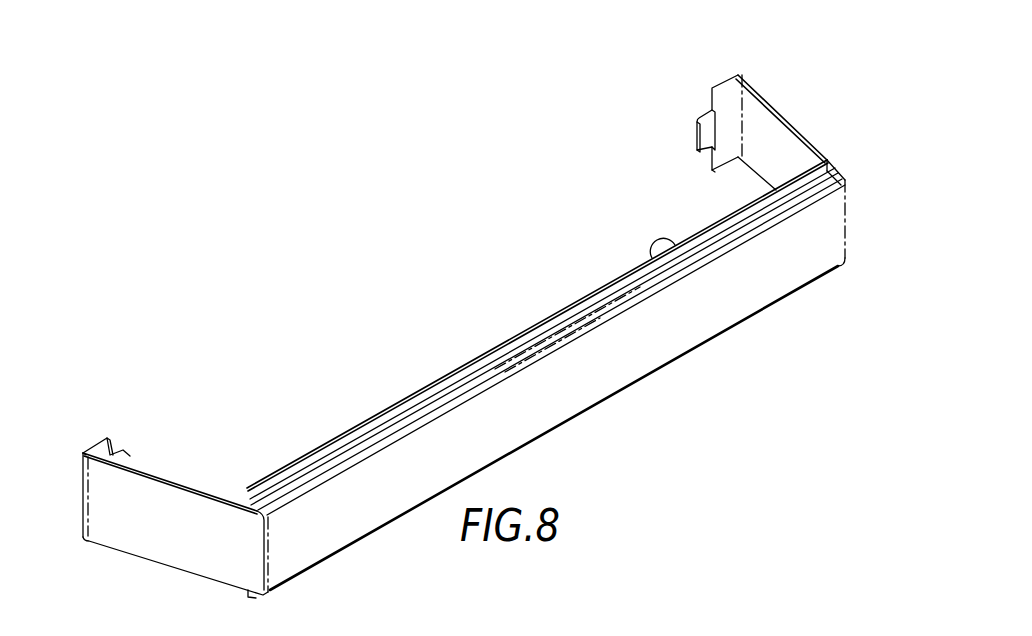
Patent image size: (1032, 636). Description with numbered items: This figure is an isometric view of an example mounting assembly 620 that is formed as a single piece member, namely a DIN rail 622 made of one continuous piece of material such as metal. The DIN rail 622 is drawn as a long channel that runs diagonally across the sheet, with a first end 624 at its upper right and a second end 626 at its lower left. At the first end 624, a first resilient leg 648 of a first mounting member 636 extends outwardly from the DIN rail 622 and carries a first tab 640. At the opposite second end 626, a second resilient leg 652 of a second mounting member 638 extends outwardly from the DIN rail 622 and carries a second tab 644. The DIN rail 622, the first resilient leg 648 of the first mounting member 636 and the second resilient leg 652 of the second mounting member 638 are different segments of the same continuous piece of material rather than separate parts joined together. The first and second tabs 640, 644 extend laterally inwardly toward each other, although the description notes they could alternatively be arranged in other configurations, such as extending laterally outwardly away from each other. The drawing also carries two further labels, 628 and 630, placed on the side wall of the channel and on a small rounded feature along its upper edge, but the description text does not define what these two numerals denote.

The mounting assembly 620 is at (567, 479).
The DIN rail 622 is at (595, 386).
The first end 624 is at (848, 285).
The second end 626 is at (291, 592).
The front wall 628 is at (692, 325).
The tab 630 is at (683, 242).
The first mounting member 636 is at (802, 108).
The second mounting member 638 is at (126, 562).
The first tab 640 is at (703, 135).
The second tab 644 is at (128, 452).
The first resilient leg 648 is at (756, 85).
The second resilient leg 652 is at (167, 495).